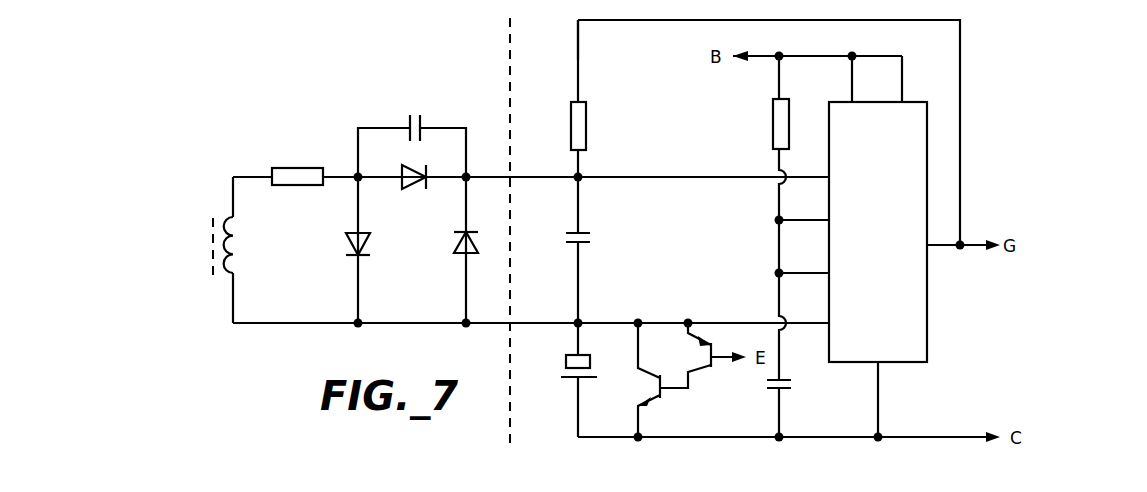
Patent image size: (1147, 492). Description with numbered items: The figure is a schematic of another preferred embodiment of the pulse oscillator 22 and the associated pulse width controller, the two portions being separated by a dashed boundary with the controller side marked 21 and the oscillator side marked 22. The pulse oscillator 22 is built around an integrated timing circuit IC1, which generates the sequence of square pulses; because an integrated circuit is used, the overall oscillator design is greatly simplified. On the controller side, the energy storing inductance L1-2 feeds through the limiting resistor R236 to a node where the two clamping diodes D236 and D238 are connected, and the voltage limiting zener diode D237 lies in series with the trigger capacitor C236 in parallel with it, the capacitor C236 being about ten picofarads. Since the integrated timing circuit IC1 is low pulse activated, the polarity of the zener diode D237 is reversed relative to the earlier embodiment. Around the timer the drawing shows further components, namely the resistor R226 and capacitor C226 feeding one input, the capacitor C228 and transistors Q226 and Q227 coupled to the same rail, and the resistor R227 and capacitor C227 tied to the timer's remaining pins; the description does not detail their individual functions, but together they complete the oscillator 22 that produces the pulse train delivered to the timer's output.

The boundary / first circuit portion 21 is at (485, 231).
The pulse oscillator 22 is at (560, 40).
The energy storing inductance L1-2 is at (208, 274).
The limiting resistor R236 is at (297, 189).
The clamping diode D236 is at (330, 250).
The trigger capacitor C236 is at (412, 132).
The voltage limiting zener diode D237 is at (410, 191).
The clamping diode D238 is at (442, 250).
The resistor R226 is at (604, 98).
The capacitor C226 is at (605, 250).
The capacitor C228 is at (559, 380).
The transistor Q226 is at (671, 380).
The transistor Q227 is at (693, 340).
The resistor R227 is at (753, 124).
The capacitor C227 is at (803, 397).
The integrated timing circuit IC1 is at (914, 232).